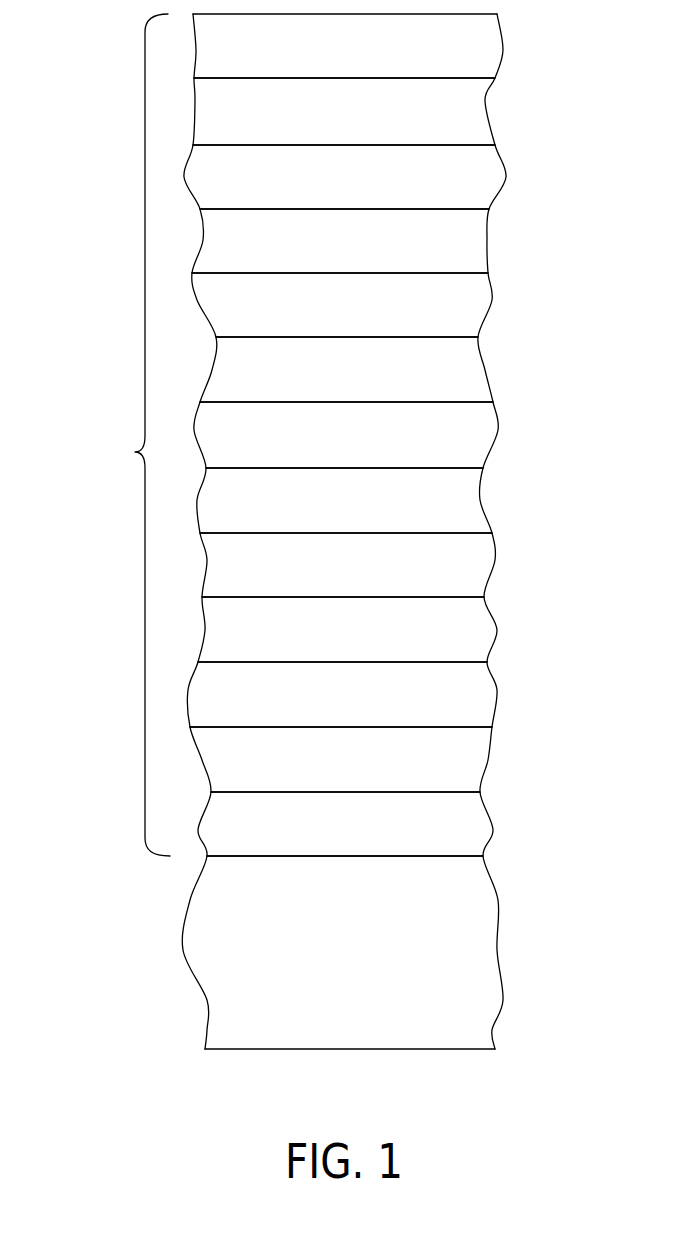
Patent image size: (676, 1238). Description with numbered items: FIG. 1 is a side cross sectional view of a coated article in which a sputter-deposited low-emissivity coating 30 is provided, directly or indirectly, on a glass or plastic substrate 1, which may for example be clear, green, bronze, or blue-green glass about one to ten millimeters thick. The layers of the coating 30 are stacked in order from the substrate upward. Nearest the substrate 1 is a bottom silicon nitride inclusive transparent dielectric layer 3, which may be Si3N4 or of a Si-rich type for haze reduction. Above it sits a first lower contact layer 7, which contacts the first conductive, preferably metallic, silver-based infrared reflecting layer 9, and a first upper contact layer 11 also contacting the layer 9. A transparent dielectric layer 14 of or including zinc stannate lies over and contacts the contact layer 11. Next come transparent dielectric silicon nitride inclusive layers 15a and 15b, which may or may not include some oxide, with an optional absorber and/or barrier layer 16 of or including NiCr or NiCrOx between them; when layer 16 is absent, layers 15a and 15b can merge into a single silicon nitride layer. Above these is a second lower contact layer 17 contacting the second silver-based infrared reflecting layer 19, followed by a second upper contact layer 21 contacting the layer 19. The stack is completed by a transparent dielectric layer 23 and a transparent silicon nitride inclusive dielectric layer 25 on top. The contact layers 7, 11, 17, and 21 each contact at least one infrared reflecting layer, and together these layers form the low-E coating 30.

The substrate 1 is at (472, 957).
The bottom silicon nitride inclusive transparent dielectric layer 3 is at (467, 827).
The first lower contact layer 7 is at (468, 763).
The first infrared reflecting layer 9 is at (470, 700).
The first upper contact layer 11 is at (470, 632).
The transparent dielectric layer 14 is at (455, 565).
The transparent dielectric silicon nitride inclusive layer 15a is at (456, 497).
The transparent dielectric silicon nitride inclusive layer 15b is at (455, 378).
The absorber and/or barrier layer 16 is at (470, 436).
The second lower contact layer 17 is at (460, 308).
The second infrared reflecting layer 19 is at (460, 247).
The second upper contact layer 21 is at (473, 180).
The transparent dielectric layer 23 is at (473, 118).
The transparent silicon nitride inclusive dielectric layer 25 is at (477, 53).
The low-E coating 30 is at (135, 452).